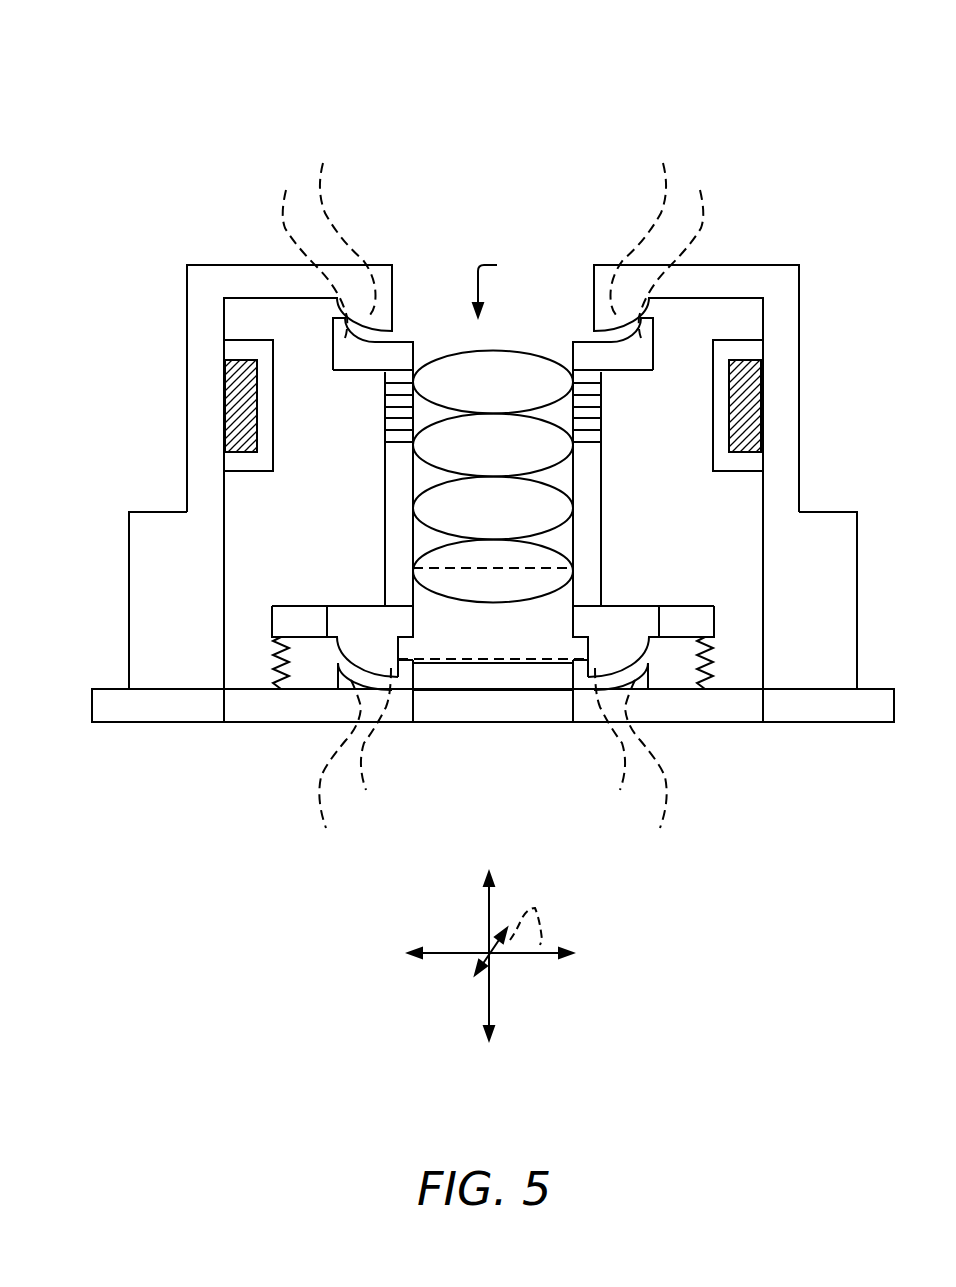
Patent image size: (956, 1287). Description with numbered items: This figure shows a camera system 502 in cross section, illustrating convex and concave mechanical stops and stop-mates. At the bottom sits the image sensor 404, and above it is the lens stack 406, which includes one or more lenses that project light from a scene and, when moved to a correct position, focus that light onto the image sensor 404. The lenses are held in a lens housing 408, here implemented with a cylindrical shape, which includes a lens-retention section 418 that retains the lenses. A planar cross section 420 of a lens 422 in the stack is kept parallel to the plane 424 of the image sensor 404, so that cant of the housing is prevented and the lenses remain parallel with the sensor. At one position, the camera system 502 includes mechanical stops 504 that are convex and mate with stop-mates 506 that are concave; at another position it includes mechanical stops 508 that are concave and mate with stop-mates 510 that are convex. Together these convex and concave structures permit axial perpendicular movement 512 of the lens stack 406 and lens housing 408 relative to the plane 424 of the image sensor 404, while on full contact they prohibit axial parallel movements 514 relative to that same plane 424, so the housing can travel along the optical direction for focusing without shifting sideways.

The camera system 502 is at (766, 65).
The image sensor 404 is at (453, 675).
The lens stack 406 is at (506, 285).
The lens housing 408 is at (343, 502).
The lens-retention section 418 is at (400, 582).
The planar cross section 420 is at (500, 568).
The lens 422 is at (547, 582).
The plane of image sensor 424 is at (493, 661).
The mechanical stops 504 is at (486, 766).
The stop-mates 506 is at (494, 742).
The mechanical stops 508 is at (494, 227).
The stop-mates 510 is at (494, 252).
The axial perpendicular movement 512 is at (490, 942).
The axial parallel movements 514 is at (550, 920).